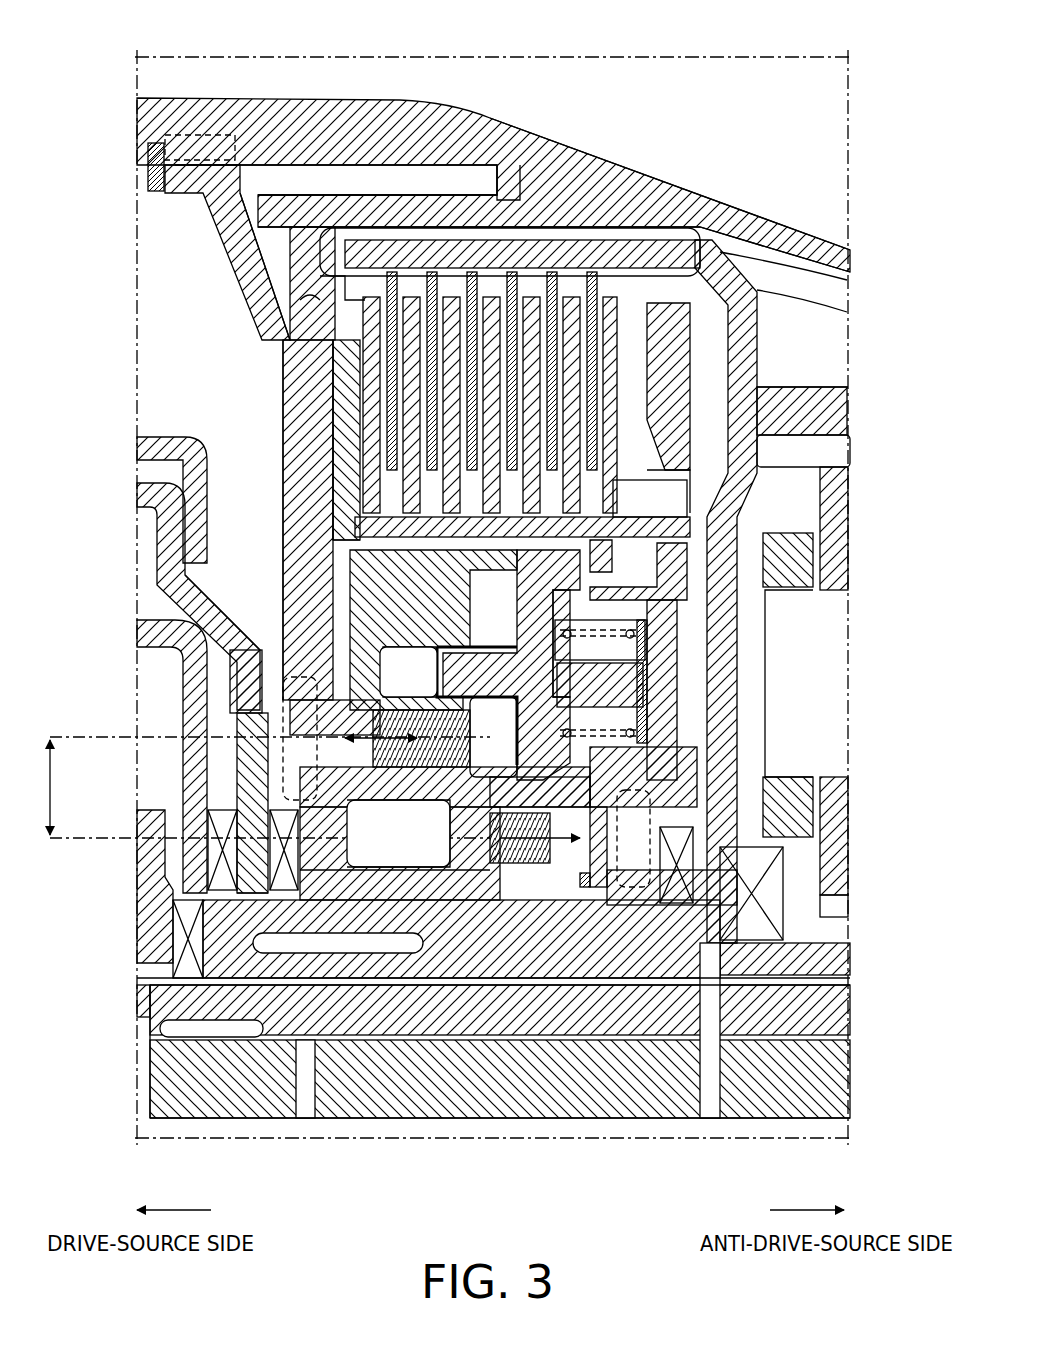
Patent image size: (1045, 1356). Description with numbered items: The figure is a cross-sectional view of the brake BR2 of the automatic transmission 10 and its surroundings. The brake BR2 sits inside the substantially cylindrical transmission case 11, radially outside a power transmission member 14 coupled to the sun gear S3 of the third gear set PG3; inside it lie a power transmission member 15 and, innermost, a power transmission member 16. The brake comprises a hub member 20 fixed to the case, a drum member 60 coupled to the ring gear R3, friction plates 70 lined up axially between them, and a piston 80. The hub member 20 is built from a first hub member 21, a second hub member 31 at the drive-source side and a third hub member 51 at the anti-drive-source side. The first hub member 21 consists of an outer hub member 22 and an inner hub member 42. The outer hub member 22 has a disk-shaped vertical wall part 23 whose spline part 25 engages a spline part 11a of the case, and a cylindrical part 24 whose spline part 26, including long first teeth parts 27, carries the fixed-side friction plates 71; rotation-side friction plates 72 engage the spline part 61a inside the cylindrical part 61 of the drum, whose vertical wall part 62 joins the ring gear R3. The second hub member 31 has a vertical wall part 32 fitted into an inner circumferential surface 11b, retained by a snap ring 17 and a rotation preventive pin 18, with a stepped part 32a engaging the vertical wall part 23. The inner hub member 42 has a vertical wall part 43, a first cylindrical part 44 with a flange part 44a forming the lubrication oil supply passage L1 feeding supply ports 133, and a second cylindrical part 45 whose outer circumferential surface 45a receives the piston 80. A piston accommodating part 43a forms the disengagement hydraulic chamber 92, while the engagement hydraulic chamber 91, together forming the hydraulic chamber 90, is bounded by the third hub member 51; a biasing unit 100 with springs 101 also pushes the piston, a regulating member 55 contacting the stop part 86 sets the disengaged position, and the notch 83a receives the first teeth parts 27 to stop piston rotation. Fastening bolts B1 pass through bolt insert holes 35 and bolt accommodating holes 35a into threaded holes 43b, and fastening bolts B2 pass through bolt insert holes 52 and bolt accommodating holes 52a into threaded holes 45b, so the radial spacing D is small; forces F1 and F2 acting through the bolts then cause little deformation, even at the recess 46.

The automatic transmission 10 is at (753, 205).
The transmission case 11 is at (690, 195).
The spline part 11a is at (510, 168).
The inner circumferential surface 11b is at (262, 148).
The power transmission member 14 is at (850, 960).
The power transmission member 15 is at (850, 1020).
The power transmission member 16 is at (850, 1090).
The snap ring 17 is at (157, 145).
The rotation preventive pin 18 is at (213, 140).
The hub member 20 is at (830, 515).
The first hub member 21 is at (330, 370).
The outer hub member 22 is at (320, 440).
The vertical wall part 23 is at (190, 455).
The cylindrical part 24 is at (288, 478).
The spline part 25 is at (345, 193).
The spline part 26 is at (652, 495).
The first teeth parts 27 is at (678, 462).
The second hub member 31 is at (150, 520).
The vertical wall part 32 is at (285, 350).
The stepped part 32a is at (250, 578).
The bolt insert holes 35 is at (245, 770).
The bolt accommodating holes 35a is at (255, 800).
The inner hub member 42 is at (375, 628).
The vertical wall part 43 is at (190, 645).
The piston accommodating part 43a is at (250, 690).
The threaded holes 43b is at (172, 880).
The first cylindrical part 44 is at (497, 572).
The flange part 44a is at (612, 545).
The second cylindrical part 45 is at (500, 880).
The outer circumferential surface 45a is at (455, 792).
The threaded holes 45b is at (462, 900).
The recess 46 is at (480, 770).
The third hub member 51 is at (602, 778).
The bolt insert holes 52 is at (600, 890).
The bolt accommodating holes 52a is at (820, 830).
The regulating member 55 is at (680, 737).
The drum member 60 is at (850, 265).
The cylindrical part 61 is at (575, 255).
The spline part 61a is at (790, 293).
The vertical wall part 62 is at (850, 450).
The friction plates 70 is at (470, 268).
The fixed-side friction plates 71 is at (290, 330).
The rotation-side friction plates 72 is at (300, 292).
The piston 80 is at (692, 337).
The notch 83a is at (735, 475).
The stop part 86 is at (600, 685).
The hydraulic chamber 90 is at (660, 805).
The hydraulic chamber for engagement 91 is at (600, 629).
The hydraulic chamber for disengagement 92 is at (408, 672).
The biasing unit 100 is at (652, 633).
The springs 101 is at (575, 765).
The supply ports 133 is at (820, 570).
The fastening bolts B1 is at (290, 715).
The fastening bolts B2 is at (650, 810).
The brake BR2 is at (646, 226).
The radial spacing D is at (39, 787).
The force F1 is at (366, 752).
The force F2 is at (547, 840).
The oil supply passage for lubrication L1 is at (355, 576).
The third gear set PG3 is at (830, 385).
The ring gear R3 is at (835, 410).
The sun gear S3 is at (850, 935).